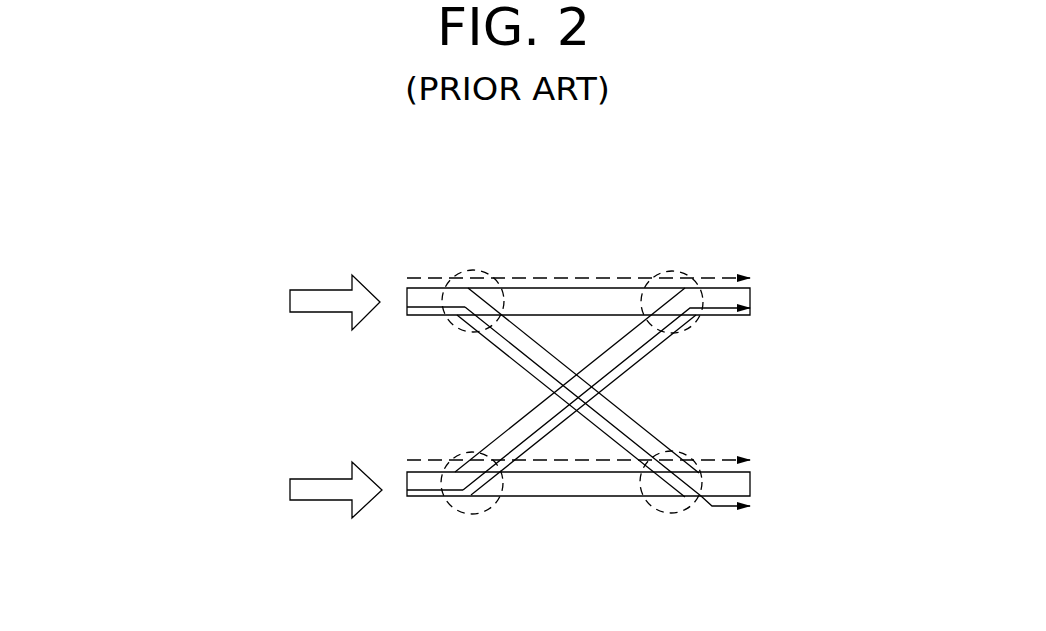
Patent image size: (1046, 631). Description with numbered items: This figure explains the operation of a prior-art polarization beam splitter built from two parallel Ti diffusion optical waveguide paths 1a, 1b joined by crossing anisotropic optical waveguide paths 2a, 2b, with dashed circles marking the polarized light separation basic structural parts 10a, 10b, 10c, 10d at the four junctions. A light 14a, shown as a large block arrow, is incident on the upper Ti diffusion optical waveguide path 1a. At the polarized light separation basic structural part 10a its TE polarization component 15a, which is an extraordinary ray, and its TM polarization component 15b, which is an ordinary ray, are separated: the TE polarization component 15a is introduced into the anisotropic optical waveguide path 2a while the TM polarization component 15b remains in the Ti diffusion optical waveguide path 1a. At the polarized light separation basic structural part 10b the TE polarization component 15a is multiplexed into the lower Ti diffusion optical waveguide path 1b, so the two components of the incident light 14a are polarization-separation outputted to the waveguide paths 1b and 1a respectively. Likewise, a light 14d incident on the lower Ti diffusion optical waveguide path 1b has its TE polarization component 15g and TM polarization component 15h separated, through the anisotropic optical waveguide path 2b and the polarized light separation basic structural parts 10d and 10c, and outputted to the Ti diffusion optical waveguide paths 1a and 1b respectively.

The Ti diffusion optical waveguide path 1a is at (430, 288).
The Ti diffusion optical waveguide path 1b is at (433, 498).
The anisotropic optical waveguide path 2a is at (565, 288).
The anisotropic optical waveguide path 2b is at (583, 498).
The polarized light separation basic structural part 10a is at (483, 272).
The polarized light separation basic structural part 10b is at (682, 275).
The polarized light separation basic structural part 10c is at (688, 505).
The polarized light separation basic structural part 10d is at (490, 507).
The incident light 14a is at (298, 290).
The incident light 14d is at (300, 500).
The TE polarization component 15a is at (417, 277).
The TM polarization component 15b is at (416, 316).
The TE polarization component 15g is at (417, 458).
The TM polarization component 15h is at (413, 500).